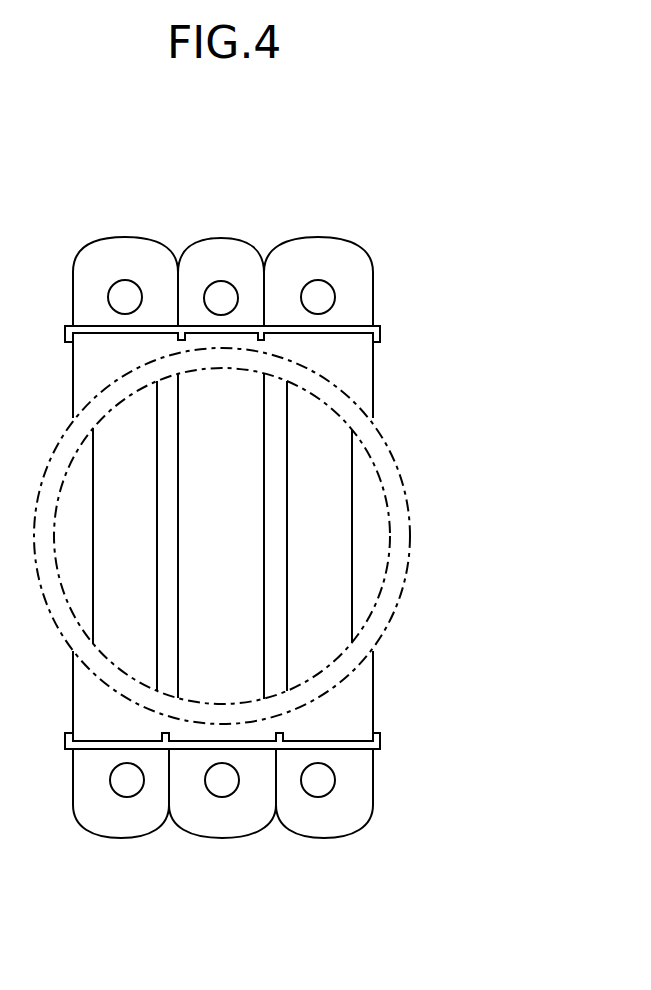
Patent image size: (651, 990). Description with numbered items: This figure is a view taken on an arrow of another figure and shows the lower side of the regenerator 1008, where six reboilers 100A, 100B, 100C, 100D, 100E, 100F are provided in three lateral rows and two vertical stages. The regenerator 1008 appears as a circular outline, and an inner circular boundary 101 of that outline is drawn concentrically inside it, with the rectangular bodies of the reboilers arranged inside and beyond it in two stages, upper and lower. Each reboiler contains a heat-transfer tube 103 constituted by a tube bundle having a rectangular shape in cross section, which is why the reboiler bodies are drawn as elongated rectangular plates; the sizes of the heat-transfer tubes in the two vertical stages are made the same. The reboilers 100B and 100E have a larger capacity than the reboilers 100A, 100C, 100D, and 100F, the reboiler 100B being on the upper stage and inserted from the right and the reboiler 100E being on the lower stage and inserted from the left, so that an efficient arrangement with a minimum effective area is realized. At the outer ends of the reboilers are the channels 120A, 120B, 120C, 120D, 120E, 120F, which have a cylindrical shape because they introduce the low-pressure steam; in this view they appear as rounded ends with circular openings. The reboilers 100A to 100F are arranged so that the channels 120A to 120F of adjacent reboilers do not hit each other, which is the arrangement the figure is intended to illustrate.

The reboiler 100A is at (118, 214).
The reboiler 100B is at (225, 870).
The reboiler 100C is at (320, 214).
The reboiler 100D is at (120, 870).
The reboiler 100E is at (223, 214).
The reboiler 100F is at (323, 870).
The channel 120A is at (95, 258).
The channel 120B is at (203, 827).
The channel 120C is at (303, 258).
The channel 120D is at (97, 827).
The channel 120E is at (200, 257).
The channel 120F is at (305, 828).
The regenerator 1008 is at (386, 433).
The ring 101 is at (387, 490).
The heat-transfer tube 103 is at (376, 545).